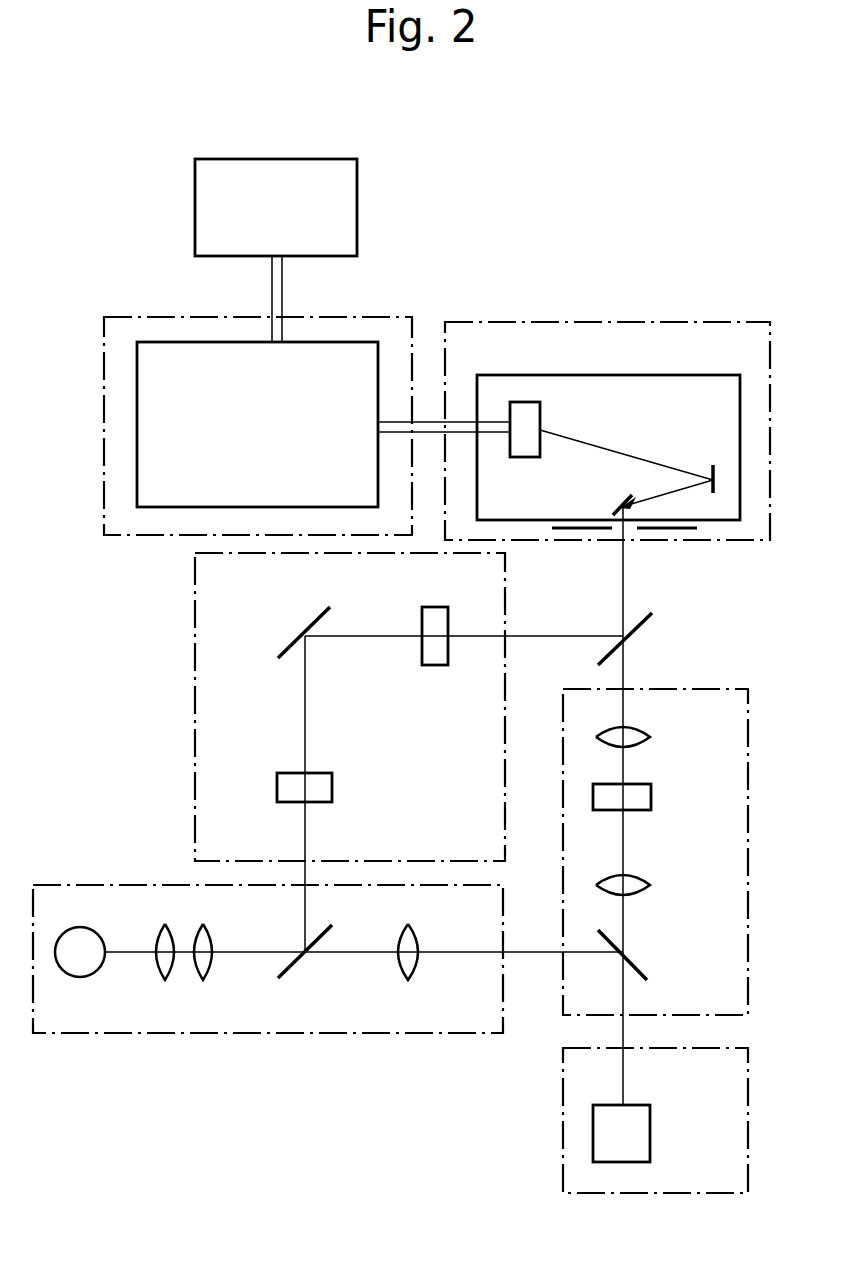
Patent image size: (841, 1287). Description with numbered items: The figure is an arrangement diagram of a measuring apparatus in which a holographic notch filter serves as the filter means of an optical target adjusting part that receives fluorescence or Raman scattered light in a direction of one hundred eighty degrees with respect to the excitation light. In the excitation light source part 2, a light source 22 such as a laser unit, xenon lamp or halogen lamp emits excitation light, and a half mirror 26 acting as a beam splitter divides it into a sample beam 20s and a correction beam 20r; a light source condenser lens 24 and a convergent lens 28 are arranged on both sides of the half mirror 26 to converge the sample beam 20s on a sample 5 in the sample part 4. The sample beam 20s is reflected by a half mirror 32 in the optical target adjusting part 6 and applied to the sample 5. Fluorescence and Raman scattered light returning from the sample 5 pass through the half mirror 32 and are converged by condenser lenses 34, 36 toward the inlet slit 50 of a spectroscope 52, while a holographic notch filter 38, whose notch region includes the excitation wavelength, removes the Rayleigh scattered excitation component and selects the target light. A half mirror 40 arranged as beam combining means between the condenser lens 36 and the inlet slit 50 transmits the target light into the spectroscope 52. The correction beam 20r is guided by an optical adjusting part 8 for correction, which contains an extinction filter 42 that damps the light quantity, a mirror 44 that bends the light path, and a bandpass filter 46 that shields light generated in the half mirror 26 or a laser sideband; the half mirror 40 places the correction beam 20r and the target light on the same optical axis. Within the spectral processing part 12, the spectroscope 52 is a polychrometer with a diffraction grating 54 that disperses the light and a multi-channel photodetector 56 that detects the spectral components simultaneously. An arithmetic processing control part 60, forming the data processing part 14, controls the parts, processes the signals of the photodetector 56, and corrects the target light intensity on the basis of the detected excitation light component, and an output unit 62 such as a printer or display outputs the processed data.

The excitation light source part 2 is at (117, 885).
The sample part 4 is at (748, 1108).
The sample 5 is at (650, 1113).
The optical target adjusting part 6 is at (748, 765).
The optical adjusting part for correction 8 is at (195, 627).
The spectral processing part 12 is at (675, 322).
The data processing part 14 is at (323, 316).
The correction beam 20r is at (305, 825).
The sample beam 20s is at (363, 955).
The light source 22 is at (82, 977).
The light source condenser lens 24 is at (188, 972).
The half mirror 26 is at (290, 972).
The convergent lens 28 is at (415, 933).
The half mirror 32 is at (638, 965).
The condenser lens 34 is at (650, 883).
The condenser lens 36 is at (650, 737).
The holographic notch filter 38 is at (651, 796).
The half mirror 40 is at (647, 622).
The extinction filter 42 is at (277, 788).
The mirror 44 is at (313, 617).
The bandpass filter 46 is at (437, 607).
The inlet slit 50 is at (670, 531).
The spectroscope 52 is at (517, 375).
The diffraction grating 54 is at (714, 465).
The multi-channel photodetector 56 is at (542, 414).
The arithmetic processing control part 60 is at (372, 341).
The output unit 62 is at (357, 180).